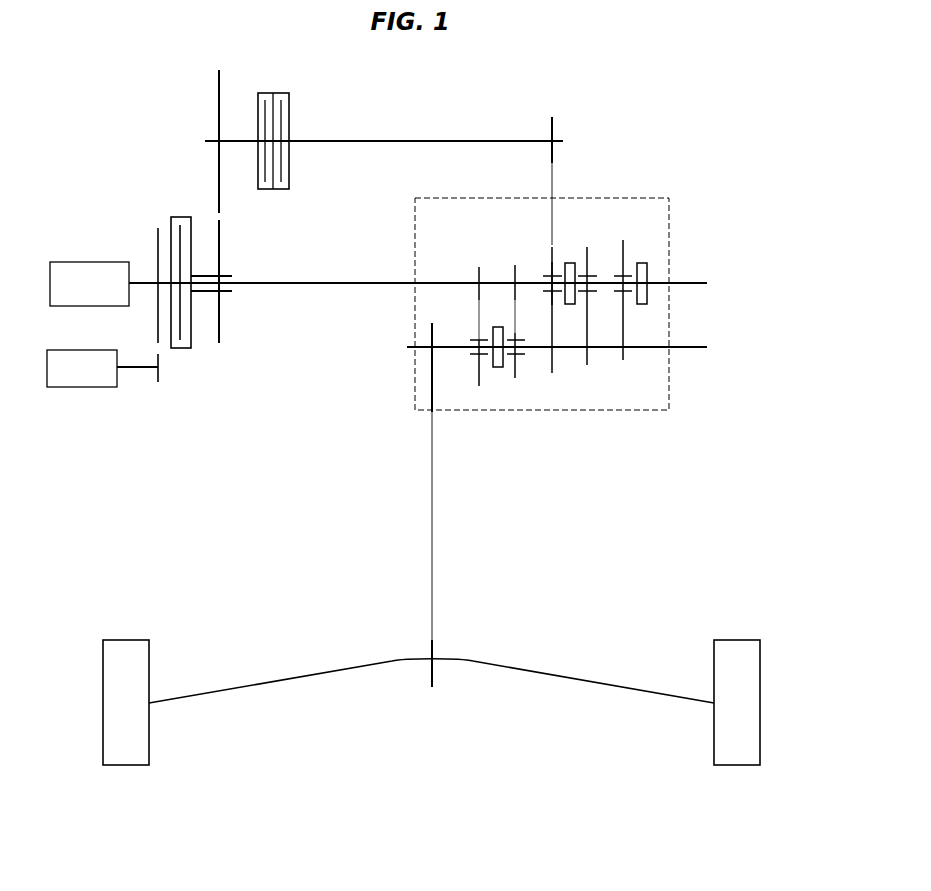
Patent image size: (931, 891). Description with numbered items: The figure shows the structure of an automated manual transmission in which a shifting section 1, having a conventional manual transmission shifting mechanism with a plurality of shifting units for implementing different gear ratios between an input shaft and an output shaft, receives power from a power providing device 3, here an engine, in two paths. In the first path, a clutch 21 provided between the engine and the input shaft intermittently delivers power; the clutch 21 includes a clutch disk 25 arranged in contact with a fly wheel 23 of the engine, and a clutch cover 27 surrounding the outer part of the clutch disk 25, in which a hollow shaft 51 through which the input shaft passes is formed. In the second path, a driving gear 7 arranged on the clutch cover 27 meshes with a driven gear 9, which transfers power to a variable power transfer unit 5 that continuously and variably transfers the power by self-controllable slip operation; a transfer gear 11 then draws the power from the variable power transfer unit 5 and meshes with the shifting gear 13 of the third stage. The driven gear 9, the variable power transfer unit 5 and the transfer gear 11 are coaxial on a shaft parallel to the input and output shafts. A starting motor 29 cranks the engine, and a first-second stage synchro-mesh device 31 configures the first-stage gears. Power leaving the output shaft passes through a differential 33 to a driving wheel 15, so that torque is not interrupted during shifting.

The shifting section 1 is at (643, 198).
The power providing device 3 is at (62, 262).
The variable power transfer unit 5 is at (290, 103).
The driving gear 7 is at (222, 229).
The driven gear 9 is at (217, 105).
The transfer gear 11 is at (557, 127).
The shifting gear 13 is at (551, 268).
The driving wheel 15 is at (125, 642).
The clutch 21 is at (176, 352).
The fly wheel 23 is at (158, 231).
The clutch disk 25 is at (172, 218).
The clutch cover 27 is at (197, 232).
The starting motor 29 is at (80, 388).
The first-second stage synchro-mesh device 31 is at (497, 368).
The differential 33 is at (398, 641).
The hollow shaft 51 is at (206, 295).